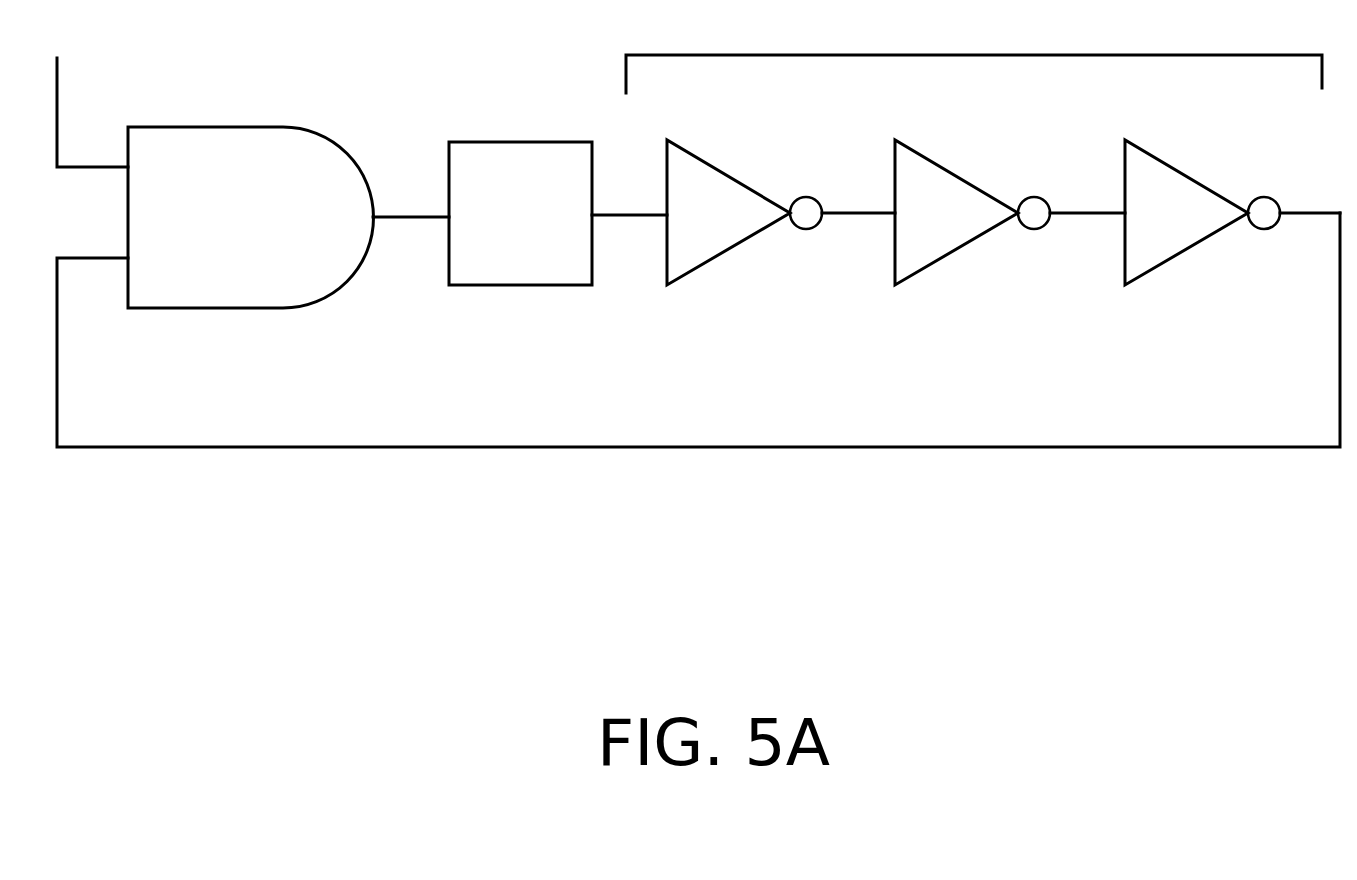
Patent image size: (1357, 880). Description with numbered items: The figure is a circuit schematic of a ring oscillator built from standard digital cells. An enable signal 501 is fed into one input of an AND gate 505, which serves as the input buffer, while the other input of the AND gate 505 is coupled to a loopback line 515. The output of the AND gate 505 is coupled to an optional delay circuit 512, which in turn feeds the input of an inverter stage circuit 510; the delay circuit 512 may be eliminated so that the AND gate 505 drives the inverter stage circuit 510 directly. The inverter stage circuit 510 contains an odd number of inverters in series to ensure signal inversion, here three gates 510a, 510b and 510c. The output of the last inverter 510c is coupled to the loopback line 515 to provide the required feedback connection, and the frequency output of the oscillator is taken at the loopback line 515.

The enable signal 501 is at (57, 77).
The AND gate 505 is at (288, 217).
The delay circuit 512 is at (558, 213).
The inverter stage circuit 510 is at (1000, 55).
The inverter gate 510a is at (781, 212).
The inverter gate 510b is at (1010, 212).
The inverter gate 510c is at (1232, 212).
The loopback line 515 is at (737, 448).